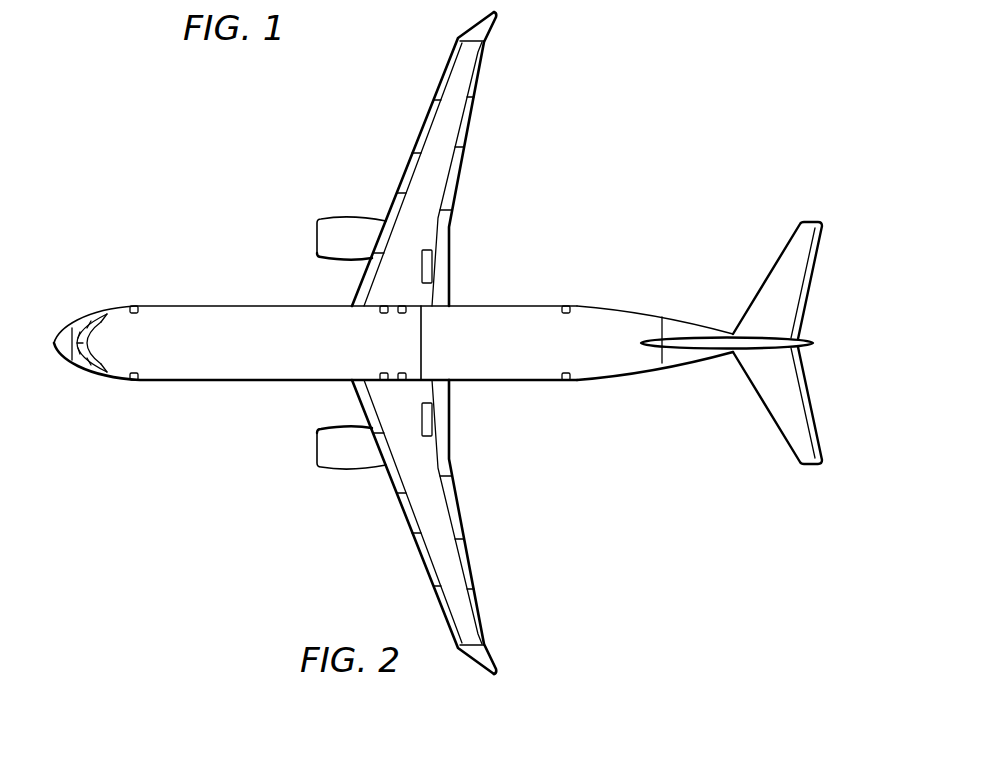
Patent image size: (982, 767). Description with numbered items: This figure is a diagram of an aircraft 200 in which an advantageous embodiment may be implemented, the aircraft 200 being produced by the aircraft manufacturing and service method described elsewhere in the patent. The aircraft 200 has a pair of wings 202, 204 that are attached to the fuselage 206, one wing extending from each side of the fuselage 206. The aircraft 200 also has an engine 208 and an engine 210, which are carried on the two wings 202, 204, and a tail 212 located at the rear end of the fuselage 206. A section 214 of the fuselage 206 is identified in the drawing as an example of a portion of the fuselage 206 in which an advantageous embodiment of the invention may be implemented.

The aircraft 200 is at (566, 131).
The wing 202 is at (404, 173).
The wing 204 is at (403, 513).
The fuselage 206 is at (207, 305).
The engine 208 is at (317, 238).
The engine 210 is at (317, 448).
The tail 212 is at (810, 296).
The section 214 is at (540, 305).